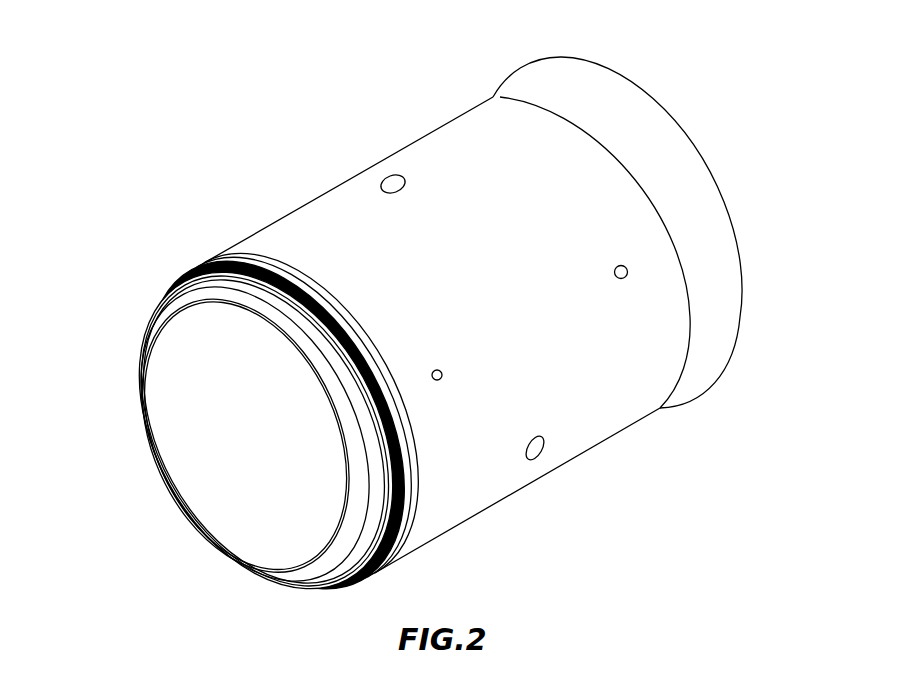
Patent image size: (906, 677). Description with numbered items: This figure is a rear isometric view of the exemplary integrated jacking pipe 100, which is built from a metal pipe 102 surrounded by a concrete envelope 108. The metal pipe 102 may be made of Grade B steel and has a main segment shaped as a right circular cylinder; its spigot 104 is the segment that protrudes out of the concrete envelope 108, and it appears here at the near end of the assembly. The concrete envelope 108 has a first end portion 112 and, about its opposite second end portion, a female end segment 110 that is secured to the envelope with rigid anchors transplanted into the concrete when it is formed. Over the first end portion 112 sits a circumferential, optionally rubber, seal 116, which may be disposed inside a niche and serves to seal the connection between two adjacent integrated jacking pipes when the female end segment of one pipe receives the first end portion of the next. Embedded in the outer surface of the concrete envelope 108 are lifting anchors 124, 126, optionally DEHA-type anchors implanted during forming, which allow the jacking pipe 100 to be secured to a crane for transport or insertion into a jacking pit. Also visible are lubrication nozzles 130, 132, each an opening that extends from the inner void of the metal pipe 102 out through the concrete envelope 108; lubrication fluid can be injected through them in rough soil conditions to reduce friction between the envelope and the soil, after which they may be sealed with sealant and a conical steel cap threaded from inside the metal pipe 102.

The integrated jacking pipe 100 is at (258, 102).
The metal pipe 102 is at (280, 446).
The spigot 104 is at (380, 569).
The concrete envelope 108 is at (277, 240).
The female end segment 110 is at (630, 117).
The first end portion 112 is at (147, 316).
The circumferential seal 116 is at (173, 283).
The lifting anchor 124 is at (440, 381).
The lifting anchor 126 is at (624, 265).
The lubrication nozzle 130 is at (388, 176).
The lubrication nozzle 132 is at (545, 440).